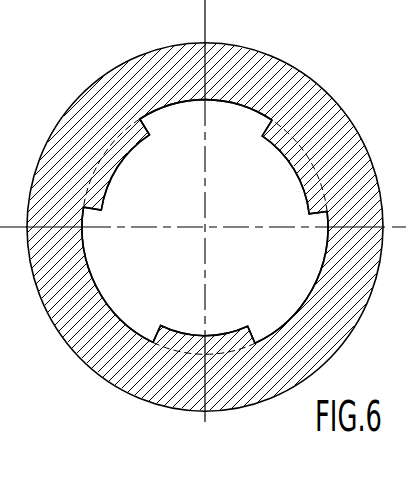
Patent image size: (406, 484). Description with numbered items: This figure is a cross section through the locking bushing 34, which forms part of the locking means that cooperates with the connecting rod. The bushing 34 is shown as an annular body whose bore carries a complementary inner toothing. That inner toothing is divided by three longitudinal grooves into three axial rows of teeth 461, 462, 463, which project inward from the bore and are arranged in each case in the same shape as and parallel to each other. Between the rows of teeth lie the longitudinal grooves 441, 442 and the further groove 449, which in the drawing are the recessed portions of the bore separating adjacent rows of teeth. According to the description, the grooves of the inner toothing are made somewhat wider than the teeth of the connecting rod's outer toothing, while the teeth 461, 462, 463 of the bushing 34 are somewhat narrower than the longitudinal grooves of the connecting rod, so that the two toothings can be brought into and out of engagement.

The locking bushing 34 is at (77, 342).
The longitudinal groove 441 is at (98, 275).
The longitudinal groove 442 is at (242, 109).
The bore surface 449 is at (306, 298).
The row of teeth 461 is at (114, 164).
The row of teeth 462 is at (291, 176).
The row of teeth 463 is at (222, 331).